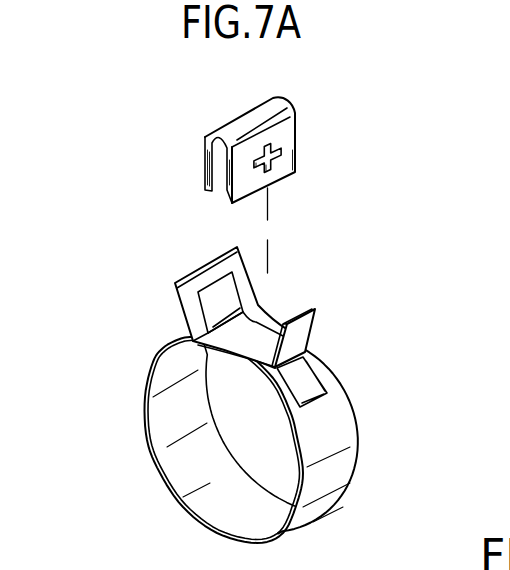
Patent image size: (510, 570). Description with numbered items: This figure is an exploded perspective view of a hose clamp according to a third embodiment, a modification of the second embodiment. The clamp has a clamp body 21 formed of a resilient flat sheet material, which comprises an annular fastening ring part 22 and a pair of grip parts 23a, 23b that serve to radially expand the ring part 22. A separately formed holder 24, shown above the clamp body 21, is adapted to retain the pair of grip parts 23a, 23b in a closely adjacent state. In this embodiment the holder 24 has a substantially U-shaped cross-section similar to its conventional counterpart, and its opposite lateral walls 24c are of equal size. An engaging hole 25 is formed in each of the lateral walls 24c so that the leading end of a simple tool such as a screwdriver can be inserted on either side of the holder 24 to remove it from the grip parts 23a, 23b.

The clamp body 21 is at (220, 395).
The annular fastening ring part 22 is at (211, 485).
The grip part 23a is at (185, 297).
The grip part 23b is at (305, 329).
The holder 24 is at (253, 182).
The lateral wall 24c is at (205, 176).
The engaging hole 25 is at (254, 173).